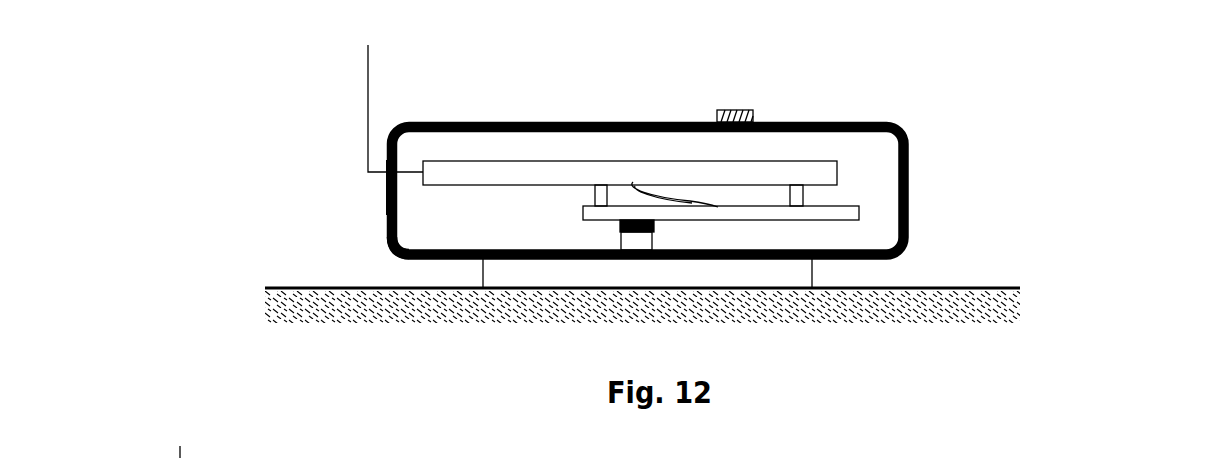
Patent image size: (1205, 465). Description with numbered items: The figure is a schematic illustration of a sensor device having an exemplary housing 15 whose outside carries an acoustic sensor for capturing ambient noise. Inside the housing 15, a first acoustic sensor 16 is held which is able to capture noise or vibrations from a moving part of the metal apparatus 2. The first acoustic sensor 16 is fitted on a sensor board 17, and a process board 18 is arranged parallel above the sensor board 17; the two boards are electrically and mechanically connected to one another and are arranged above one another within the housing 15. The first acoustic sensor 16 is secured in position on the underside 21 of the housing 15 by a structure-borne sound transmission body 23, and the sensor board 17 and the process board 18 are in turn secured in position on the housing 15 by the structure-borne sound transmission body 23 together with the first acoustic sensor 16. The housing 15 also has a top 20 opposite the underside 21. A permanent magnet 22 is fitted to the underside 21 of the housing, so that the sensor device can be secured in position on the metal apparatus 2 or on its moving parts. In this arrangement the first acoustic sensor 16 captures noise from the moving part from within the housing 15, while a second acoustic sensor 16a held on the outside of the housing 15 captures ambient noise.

The metal apparatus 2 is at (600, 308).
The housing 15 is at (387, 187).
The first acoustic sensor 16 is at (655, 238).
The second acoustic sensor 16a is at (753, 110).
The sensor board 17 is at (740, 220).
The process board 18 is at (525, 175).
The top of the housing 20 is at (907, 133).
The underside of the housing 21 is at (413, 257).
The permanent magnet 22 is at (567, 273).
The structure-borne sound transmission body 23 is at (633, 253).